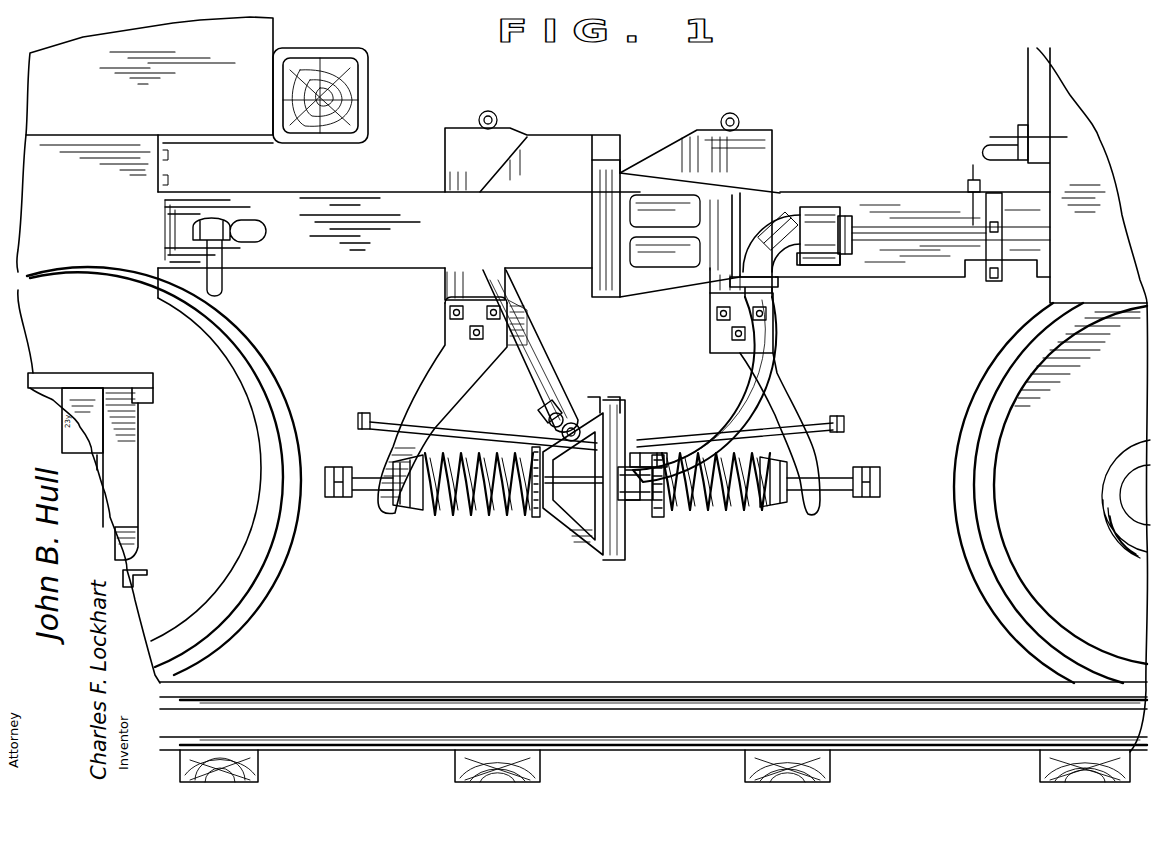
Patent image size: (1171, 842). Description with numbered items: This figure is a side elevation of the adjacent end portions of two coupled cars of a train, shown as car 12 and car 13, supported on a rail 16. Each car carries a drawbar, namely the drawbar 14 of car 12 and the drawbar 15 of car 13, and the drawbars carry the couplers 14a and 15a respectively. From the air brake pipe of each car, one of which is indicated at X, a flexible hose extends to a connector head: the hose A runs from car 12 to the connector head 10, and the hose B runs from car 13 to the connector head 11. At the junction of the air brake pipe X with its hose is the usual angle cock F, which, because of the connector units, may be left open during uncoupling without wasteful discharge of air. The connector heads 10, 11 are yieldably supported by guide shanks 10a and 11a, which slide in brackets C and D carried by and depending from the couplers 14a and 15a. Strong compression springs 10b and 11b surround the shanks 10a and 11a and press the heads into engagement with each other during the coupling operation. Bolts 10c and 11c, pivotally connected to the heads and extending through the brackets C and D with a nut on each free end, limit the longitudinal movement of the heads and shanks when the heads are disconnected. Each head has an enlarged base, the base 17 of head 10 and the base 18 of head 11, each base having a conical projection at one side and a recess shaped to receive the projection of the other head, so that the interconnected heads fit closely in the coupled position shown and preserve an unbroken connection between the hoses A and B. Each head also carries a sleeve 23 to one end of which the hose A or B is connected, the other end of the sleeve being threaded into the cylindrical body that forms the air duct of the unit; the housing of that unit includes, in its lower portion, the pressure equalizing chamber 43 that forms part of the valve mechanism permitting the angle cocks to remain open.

The connector head 10 is at (537, 521).
The guide shank 10a is at (452, 508).
The compression spring 10b is at (500, 510).
The bolt 10c is at (480, 440).
The connector head 11 is at (676, 524).
The guide shank 11a is at (715, 510).
The compression spring 11b is at (763, 509).
The bolt 11c is at (697, 437).
The car 12 is at (217, 128).
The car 13 is at (1018, 137).
The drawbar 14 is at (345, 263).
The coupler 14a is at (557, 165).
The drawbar 15 is at (905, 270).
The coupler 15a is at (737, 160).
The rail 16 is at (515, 690).
The enlarged base 17 is at (592, 532).
The enlarged base 18 is at (628, 522).
The sleeve 23 is at (578, 427).
The pressure equalizing chamber 43 is at (558, 414).
The flexible hose A is at (533, 382).
The flexible hose B is at (755, 358).
The bracket C is at (440, 358).
The bracket D is at (780, 376).
The angle cock F is at (820, 232).
The air brake pipe X is at (905, 240).